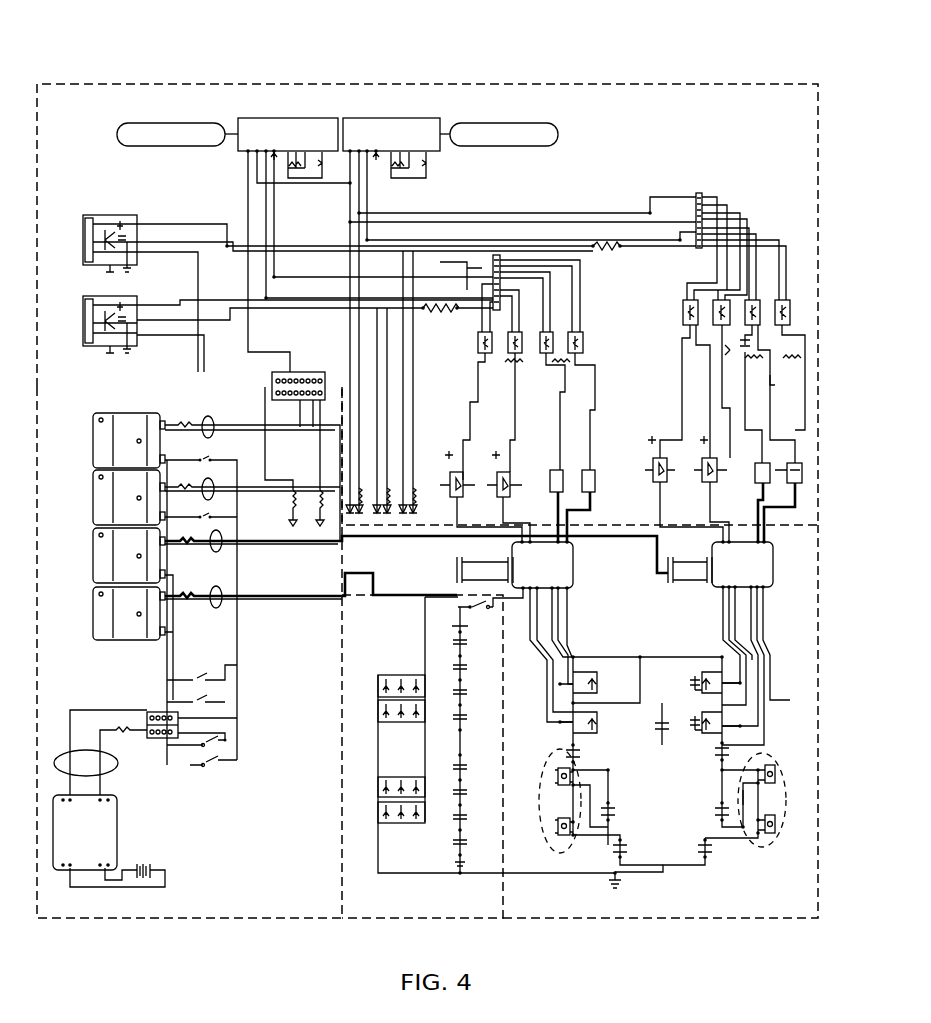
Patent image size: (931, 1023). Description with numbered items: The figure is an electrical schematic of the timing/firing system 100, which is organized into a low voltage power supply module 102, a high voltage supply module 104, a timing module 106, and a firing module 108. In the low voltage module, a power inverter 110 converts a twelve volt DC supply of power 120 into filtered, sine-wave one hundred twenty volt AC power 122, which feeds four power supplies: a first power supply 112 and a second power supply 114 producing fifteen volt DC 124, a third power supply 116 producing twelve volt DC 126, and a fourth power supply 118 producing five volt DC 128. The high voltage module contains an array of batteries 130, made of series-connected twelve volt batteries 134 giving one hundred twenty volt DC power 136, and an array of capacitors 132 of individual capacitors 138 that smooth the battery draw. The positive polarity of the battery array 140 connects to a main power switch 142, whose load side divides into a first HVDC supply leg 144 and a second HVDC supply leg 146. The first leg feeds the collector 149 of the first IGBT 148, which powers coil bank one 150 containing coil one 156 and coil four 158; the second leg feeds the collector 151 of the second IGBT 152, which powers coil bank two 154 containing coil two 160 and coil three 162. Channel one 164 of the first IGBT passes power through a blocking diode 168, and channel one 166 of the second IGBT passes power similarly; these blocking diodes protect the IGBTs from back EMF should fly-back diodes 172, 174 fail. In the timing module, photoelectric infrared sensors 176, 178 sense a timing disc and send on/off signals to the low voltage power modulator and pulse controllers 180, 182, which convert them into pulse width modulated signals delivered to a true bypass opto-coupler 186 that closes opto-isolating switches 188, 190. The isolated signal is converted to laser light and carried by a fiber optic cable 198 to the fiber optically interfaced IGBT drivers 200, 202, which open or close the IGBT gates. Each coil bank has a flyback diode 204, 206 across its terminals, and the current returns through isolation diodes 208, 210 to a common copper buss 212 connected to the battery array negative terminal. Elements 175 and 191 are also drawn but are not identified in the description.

The timing/firing system 100 is at (350, 69).
The low voltage power supply module 102 is at (185, 902).
The high voltage supply module 104 is at (420, 902).
The timing module 106 is at (100, 97).
The firing module 108 is at (601, 902).
The power inverter 110 is at (110, 828).
The first power supply 112 is at (93, 617).
The second power supply 114 is at (93, 567).
The third power supply 116 is at (93, 503).
The fourth power supply 118 is at (93, 443).
The 12V DC supply of power 120 is at (150, 865).
The 120V AC converted power 122 is at (85, 760).
The 15V DC / shield twisted pair wires 124 is at (220, 590).
The 12V DC 126 is at (212, 478).
The 5V DC 128 is at (208, 426).
The array of batteries 130 is at (462, 838).
The array of capacitors 132 is at (386, 826).
The 12V DC batteries 134 is at (462, 771).
The 120V DC power 136 is at (457, 600).
The 10,000 pico-Farad capacitors 138 is at (386, 780).
The positive polarity of the battery array 140 is at (424, 636).
The main power switch 142 is at (477, 612).
The first HVDC supply leg 144 is at (576, 672).
The second HVDC supply leg 146 is at (700, 669).
The first insulated gate bipolar transistor 148 is at (573, 586).
The collector of the first IGBT 149 is at (575, 718).
The coil bank 1 150 is at (541, 790).
The collector of the second IGBT 151 is at (720, 668).
The second insulated gate bipolar transistor 152 is at (766, 571).
The coil bank 2 154 is at (782, 790).
The coil 1 156 is at (556, 829).
The coil 4 158 is at (580, 769).
The coil 2 160 is at (773, 842).
The coil 3 162 is at (760, 762).
The Channel 1 of the first IGBT 164 is at (530, 577).
The Channel 1 of the second IGBT 166 is at (711, 586).
The blocking diode 168 is at (592, 739).
The fly-back diode 172 is at (598, 708).
The fly-back diode 174 is at (695, 682).
The capacitor 175 is at (715, 751).
The photoelectric infrared sensor 176 is at (83, 247).
The photoelectric infrared sensor 178 is at (83, 327).
The low voltage power modulator and pulse controller 180 is at (263, 126).
The low voltage power modulator and pulse controller 182 is at (366, 126).
The true bypass opto-coupler 186 is at (737, 403).
The opto-isolating switch 188 is at (585, 335).
The opto-isolating switch 190 is at (790, 303).
The driver 191 is at (805, 465).
The fiber optic cable 198 is at (800, 501).
The fiber optically interfaced IGBT driver 200 is at (508, 578).
The fiber optically interfaced IGBT driver 202 is at (711, 561).
The flyback diode 204 is at (611, 821).
The flyback diode 206 is at (718, 809).
The isolation diode 208 is at (626, 851).
The isolation diode 210 is at (740, 836).
The common copper buss 212 is at (665, 865).